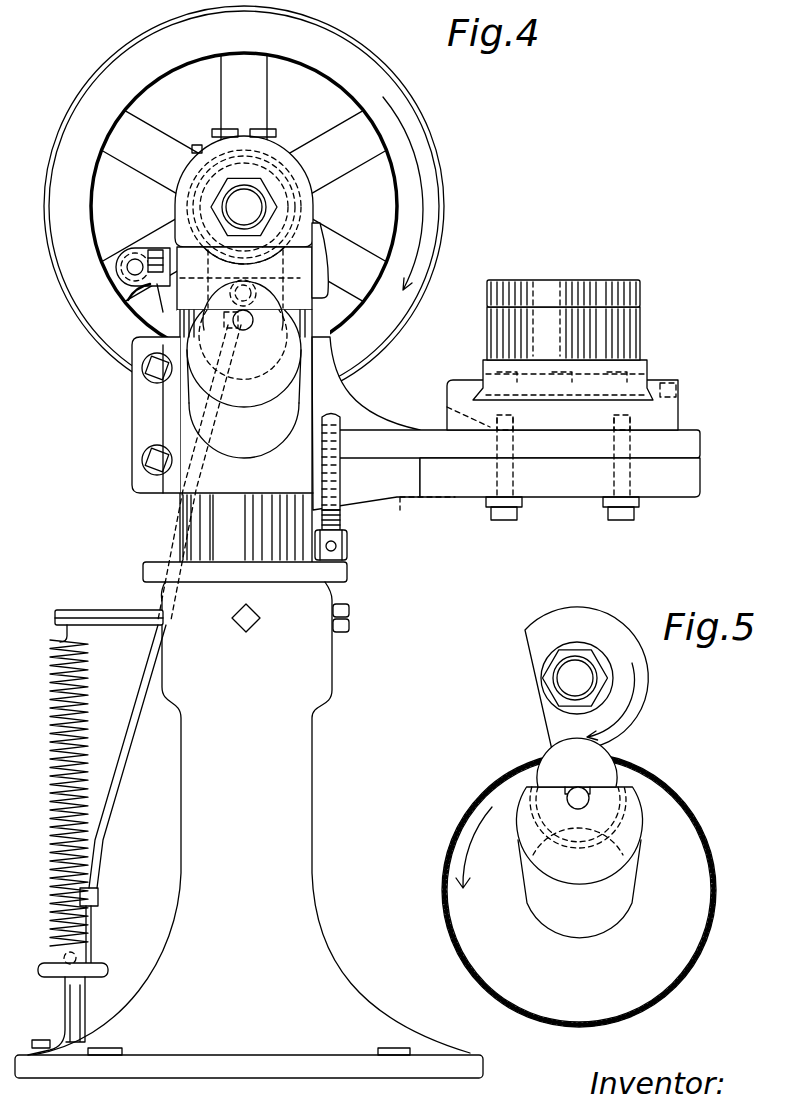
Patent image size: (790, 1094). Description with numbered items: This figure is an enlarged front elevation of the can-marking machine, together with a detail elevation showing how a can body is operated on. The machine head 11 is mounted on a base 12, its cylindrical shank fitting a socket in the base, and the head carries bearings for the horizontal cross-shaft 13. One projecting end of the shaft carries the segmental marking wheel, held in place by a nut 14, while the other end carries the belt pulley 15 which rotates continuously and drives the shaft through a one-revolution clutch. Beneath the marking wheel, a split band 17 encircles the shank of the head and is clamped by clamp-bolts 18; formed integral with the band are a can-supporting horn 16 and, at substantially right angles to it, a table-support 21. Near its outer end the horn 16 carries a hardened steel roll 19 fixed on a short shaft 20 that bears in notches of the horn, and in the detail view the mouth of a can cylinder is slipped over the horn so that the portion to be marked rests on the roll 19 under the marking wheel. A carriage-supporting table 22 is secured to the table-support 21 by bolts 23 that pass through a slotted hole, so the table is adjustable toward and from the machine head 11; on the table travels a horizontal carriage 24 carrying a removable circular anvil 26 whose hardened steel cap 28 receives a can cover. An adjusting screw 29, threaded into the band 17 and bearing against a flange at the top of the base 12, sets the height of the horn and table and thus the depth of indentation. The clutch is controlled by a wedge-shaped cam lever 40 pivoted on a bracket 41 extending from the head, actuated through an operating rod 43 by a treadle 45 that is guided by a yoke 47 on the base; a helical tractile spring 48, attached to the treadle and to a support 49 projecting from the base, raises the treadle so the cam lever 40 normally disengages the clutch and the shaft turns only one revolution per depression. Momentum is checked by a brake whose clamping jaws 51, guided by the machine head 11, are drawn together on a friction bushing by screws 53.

In FIG. 4, the machine head 11 is at (297, 345).
In FIG. 4, the base 12 is at (249, 820).
In FIG. 4, the cross-shaft 13 is at (244, 206).
In FIG. 5, the cross-shaft 13 is at (575, 678).
In FIG. 4, the nut 14 is at (256, 190).
In FIG. 5, the nut 14 is at (585, 647).
In FIG. 4, the belt pulley 15 is at (244, 206).
In FIG. 4, the can-supporting horn 16 is at (244, 384).
In FIG. 5, the can-supporting horn 16 is at (580, 862).
In FIG. 4, the band 17 is at (244, 419).
In FIG. 4, the clamp-bolts 18 is at (150, 443).
In FIG. 4, the roll 19 is at (243, 305).
In FIG. 5, the roll 19 is at (577, 762).
In FIG. 4, the short shaft 20 is at (250, 324).
In FIG. 5, the short shaft 20 is at (591, 807).
In FIG. 4, the table-support 21 is at (513, 468).
In FIG. 4, the carriage-supporting table 22 is at (562, 405).
In FIG. 4, the bolts 23 is at (508, 520).
In FIG. 4, the carriage 24 is at (640, 378).
In FIG. 4, the anvil 26 is at (563, 333).
In FIG. 4, the cap 28 is at (563, 293).
In FIG. 4, the adjusting screw 29 is at (345, 537).
In FIG. 4, the cam lever 40 is at (148, 301).
In FIG. 4, the bracket 41 is at (158, 240).
In FIG. 4, the operating rod 43 is at (112, 795).
In FIG. 4, the treadle 45 is at (95, 968).
In FIG. 4, the yoke 47 is at (62, 1008).
In FIG. 4, the tractile spring 48 is at (52, 792).
In FIG. 4, the support 49 is at (98, 610).
In FIG. 4, the clamping jaws 51 is at (163, 268).
In FIG. 4, the screws 53 is at (198, 145).